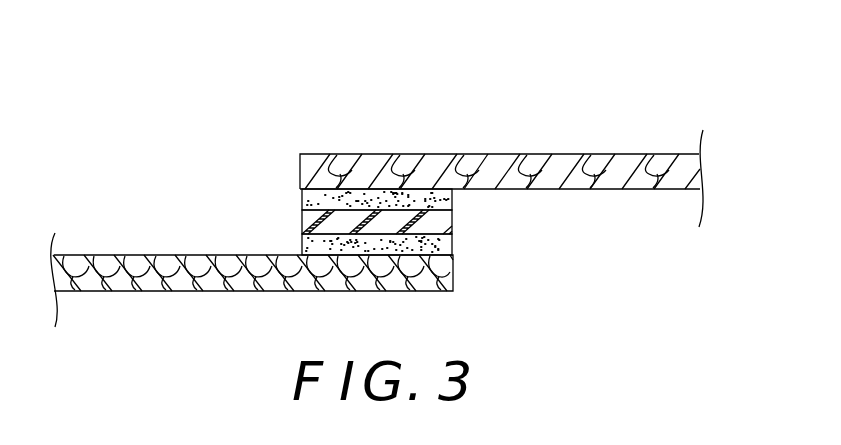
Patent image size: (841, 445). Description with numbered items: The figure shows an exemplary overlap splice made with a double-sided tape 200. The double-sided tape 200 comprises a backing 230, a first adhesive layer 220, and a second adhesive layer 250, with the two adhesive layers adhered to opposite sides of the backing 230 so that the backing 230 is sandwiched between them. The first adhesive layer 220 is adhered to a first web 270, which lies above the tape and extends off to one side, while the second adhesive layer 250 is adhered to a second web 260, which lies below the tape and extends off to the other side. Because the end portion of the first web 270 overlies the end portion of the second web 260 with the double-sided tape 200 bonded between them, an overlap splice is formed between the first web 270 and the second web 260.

The double-sided tape 200 is at (247, 215).
The first adhesive layer 220 is at (298, 198).
The backing 230 is at (453, 227).
The second adhesive layer 250 is at (453, 243).
The second web 260 is at (157, 291).
The first web 270 is at (503, 153).